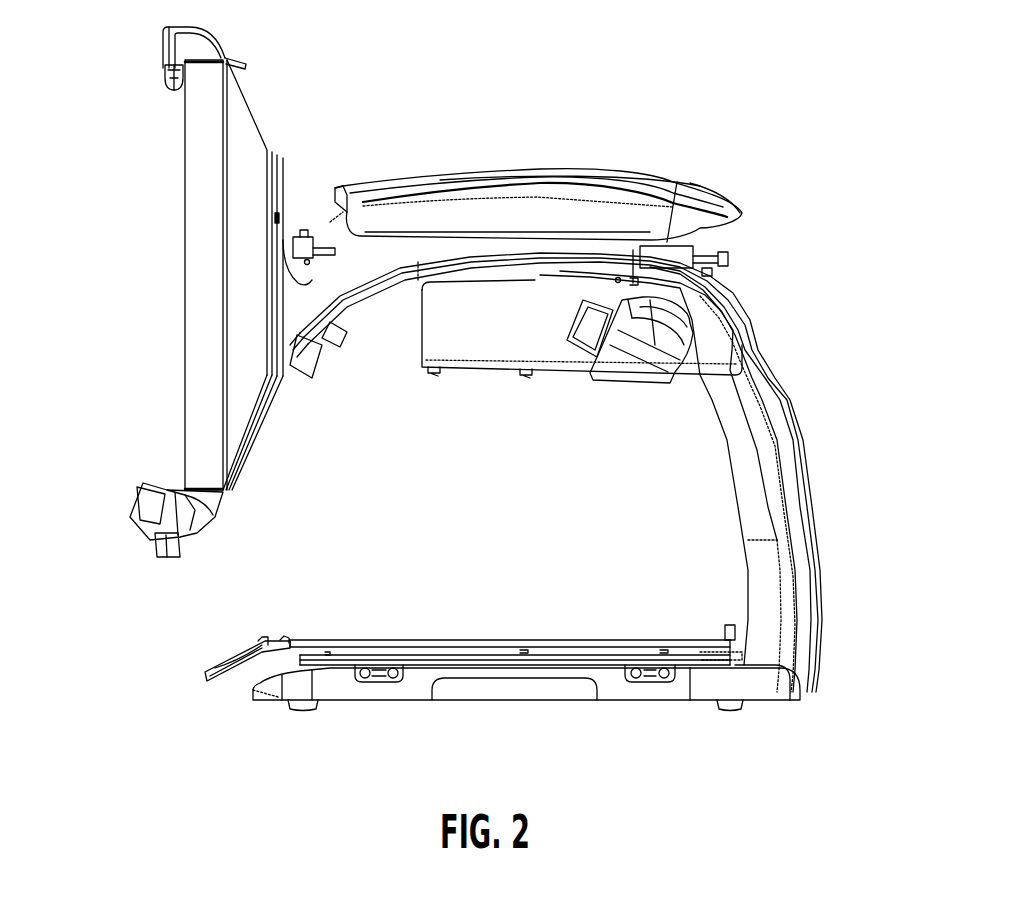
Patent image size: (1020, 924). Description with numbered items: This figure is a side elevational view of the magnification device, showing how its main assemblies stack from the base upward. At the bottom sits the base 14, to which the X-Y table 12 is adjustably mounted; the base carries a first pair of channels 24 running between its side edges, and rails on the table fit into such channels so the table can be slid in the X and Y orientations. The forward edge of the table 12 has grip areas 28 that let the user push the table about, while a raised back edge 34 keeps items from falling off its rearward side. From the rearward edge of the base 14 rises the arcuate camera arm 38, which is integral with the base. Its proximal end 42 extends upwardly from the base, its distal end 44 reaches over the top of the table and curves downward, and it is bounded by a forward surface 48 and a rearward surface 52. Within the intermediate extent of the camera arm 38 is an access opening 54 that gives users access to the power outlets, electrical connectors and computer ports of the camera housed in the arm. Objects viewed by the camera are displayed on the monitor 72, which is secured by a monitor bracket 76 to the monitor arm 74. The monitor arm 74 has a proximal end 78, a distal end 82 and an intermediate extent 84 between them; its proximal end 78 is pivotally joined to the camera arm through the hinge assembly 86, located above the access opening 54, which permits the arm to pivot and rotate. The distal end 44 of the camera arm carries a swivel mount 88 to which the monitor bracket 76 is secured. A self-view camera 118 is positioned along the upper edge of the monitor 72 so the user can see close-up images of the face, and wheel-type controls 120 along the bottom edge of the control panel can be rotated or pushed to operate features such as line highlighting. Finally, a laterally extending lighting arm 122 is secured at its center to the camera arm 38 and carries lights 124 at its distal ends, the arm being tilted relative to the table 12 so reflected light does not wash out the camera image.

The X-Y table 12 is at (317, 640).
The base 14 is at (507, 714).
The first pair of channels 24 is at (382, 682).
The grip areas 28 is at (232, 642).
The raised back edge 34 is at (723, 630).
The camera arm 38 is at (803, 500).
The camera arm proximal end 42 is at (817, 638).
The camera arm distal end 44 is at (305, 360).
The camera arm forward surface 48 is at (738, 442).
The camera arm rearward surface 52 is at (790, 427).
The access opening 54 is at (458, 337).
The monitor 72 is at (185, 237).
The monitor arm 74 is at (508, 171).
The monitor bracket 76 is at (273, 165).
The monitor arm proximal end 78 is at (700, 203).
The monitor arm distal end 82 is at (343, 190).
The monitor arm intermediate extent 84 is at (468, 185).
The hinge assembly 86 is at (693, 255).
The swivel mount 88 is at (300, 235).
The self-view camera 118 is at (166, 84).
The wheels on control panel 120 is at (182, 547).
The lighting arm 122 is at (705, 320).
The lights 124 is at (616, 350).